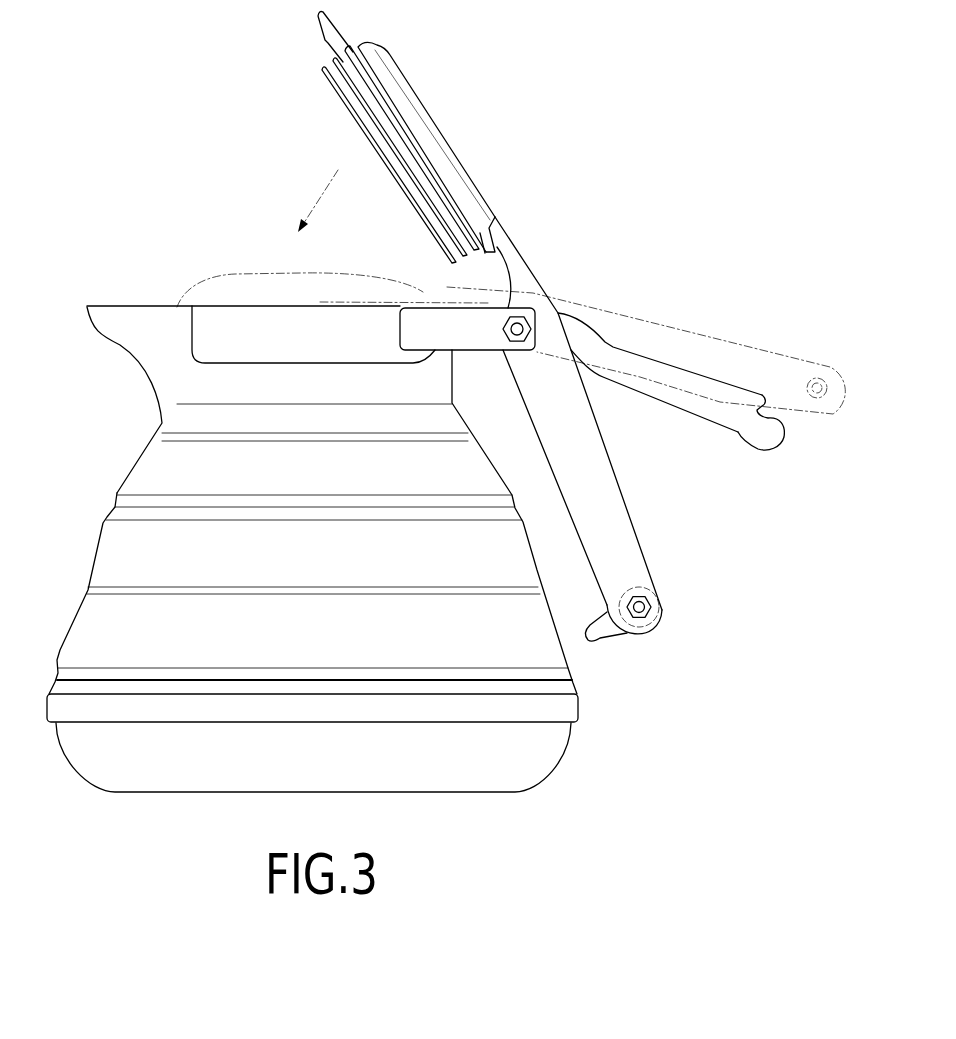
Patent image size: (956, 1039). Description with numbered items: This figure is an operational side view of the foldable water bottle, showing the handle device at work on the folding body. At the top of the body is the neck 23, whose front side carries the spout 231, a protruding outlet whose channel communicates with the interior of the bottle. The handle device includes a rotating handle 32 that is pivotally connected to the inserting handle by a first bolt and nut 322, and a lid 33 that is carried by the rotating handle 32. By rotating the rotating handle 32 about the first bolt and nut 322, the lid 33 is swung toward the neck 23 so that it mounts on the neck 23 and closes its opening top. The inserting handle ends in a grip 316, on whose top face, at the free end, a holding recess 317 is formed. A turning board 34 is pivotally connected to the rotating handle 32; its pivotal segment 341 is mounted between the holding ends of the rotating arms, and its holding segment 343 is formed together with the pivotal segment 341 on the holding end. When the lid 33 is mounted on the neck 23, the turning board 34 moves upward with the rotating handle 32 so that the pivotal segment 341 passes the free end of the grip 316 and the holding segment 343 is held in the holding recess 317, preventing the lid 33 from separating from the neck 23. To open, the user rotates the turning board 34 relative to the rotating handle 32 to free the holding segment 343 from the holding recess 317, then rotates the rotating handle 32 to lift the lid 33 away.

The neck 23 is at (440, 382).
The spout 231 is at (126, 337).
The rotating handle 32 is at (660, 529).
The lid 33 is at (440, 133).
The turning board 34 is at (661, 656).
The grip 316 is at (665, 388).
The holding recess 317 is at (748, 436).
The first bolt and nut 322 is at (513, 327).
The pivotal segment 341 is at (664, 610).
The holding segment 343 is at (597, 632).